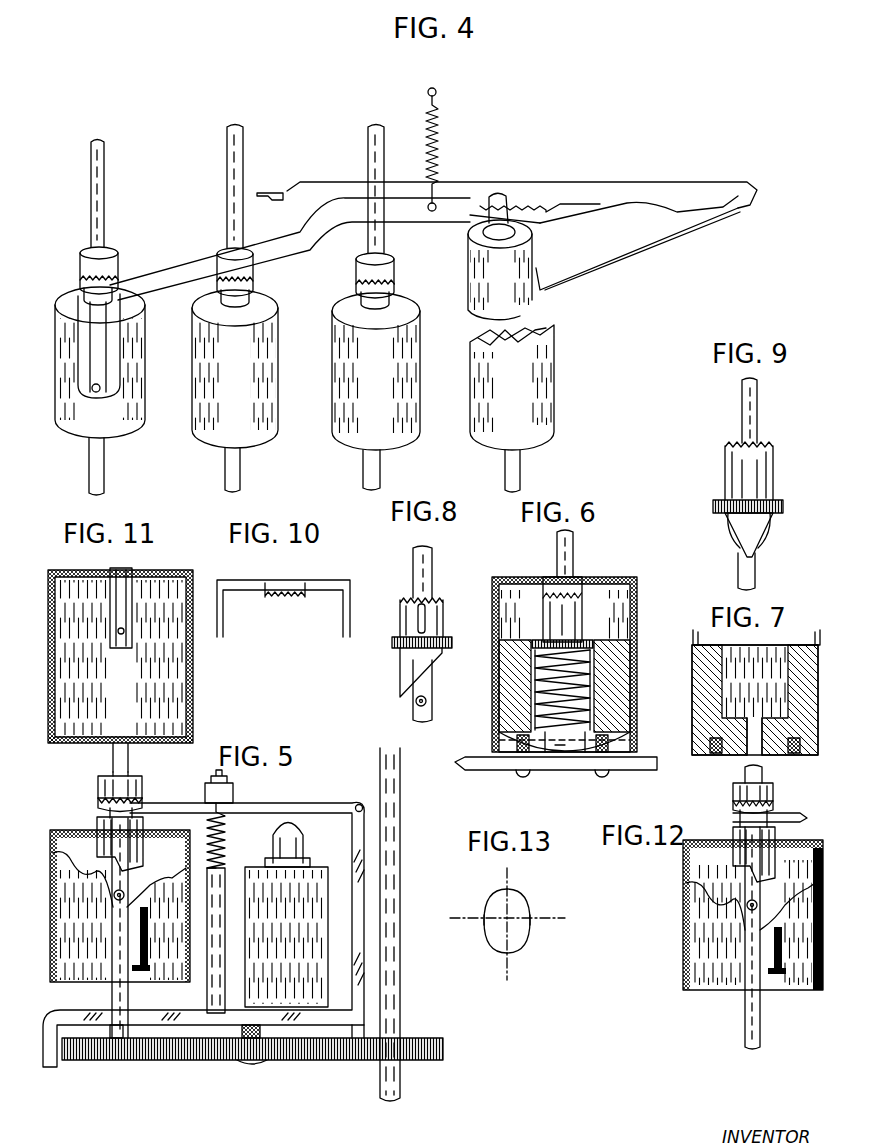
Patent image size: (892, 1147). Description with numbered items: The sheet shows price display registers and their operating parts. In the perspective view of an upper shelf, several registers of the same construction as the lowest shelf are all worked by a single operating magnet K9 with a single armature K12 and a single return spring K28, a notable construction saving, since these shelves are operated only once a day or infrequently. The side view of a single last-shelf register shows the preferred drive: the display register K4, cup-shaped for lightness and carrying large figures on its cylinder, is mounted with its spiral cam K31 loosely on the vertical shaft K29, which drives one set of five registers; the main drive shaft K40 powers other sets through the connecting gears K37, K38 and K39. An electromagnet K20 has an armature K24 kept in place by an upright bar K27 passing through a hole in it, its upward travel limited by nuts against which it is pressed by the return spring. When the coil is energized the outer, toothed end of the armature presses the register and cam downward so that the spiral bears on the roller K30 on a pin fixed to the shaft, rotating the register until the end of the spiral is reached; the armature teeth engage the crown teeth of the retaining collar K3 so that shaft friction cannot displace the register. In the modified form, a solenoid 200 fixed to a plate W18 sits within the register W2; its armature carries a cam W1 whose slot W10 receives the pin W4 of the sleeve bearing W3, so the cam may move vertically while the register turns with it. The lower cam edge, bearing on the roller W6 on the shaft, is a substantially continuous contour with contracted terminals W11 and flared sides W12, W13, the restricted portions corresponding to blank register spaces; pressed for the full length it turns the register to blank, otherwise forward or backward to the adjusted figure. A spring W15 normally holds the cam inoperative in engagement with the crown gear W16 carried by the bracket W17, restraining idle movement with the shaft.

In FIG. 4, the armature K12 is at (472, 190).
In FIG. 4, the return spring K28 is at (443, 150).
In FIG. 5, the return spring K28 is at (229, 829).
In FIG. 4, the operating magnet K9 is at (532, 247).
In FIG. 11, the register W2 is at (193, 672).
In FIG. 6, the register W2 is at (637, 614).
In FIG. 11, the sleeve bearing W3 is at (135, 614).
In FIG. 11, the pin W4 is at (118, 630).
In FIG. 10, the bracket W17 is at (240, 580).
In FIG. 7, the bracket W17 is at (812, 641).
In FIG. 10, the crown gear W16 is at (270, 600).
In FIG. 8, the cam W1 is at (442, 606).
In FIG. 6, the cam W1 is at (585, 615).
In FIG. 8, the slot W10 is at (426, 624).
In FIG. 8, the roller W6 is at (428, 701).
In FIG. 6, the solenoid 200 is at (626, 660).
In FIG. 7, the solenoid 200 is at (810, 688).
In FIG. 6, the spring W15 is at (582, 700).
In FIG. 6, the plate W18 is at (566, 764).
In FIG. 9, the contracted terminals W11 is at (752, 553).
In FIG. 13, the contracted terminals W11 is at (508, 892).
In FIG. 9, the flared side W13 is at (728, 530).
In FIG. 13, the flared side W13 is at (484, 918).
In FIG. 9, the flared side W12 is at (770, 533).
In FIG. 13, the flared side W12 is at (530, 918).
In FIG. 5, the retaining collar K3 is at (143, 789).
In FIG. 12, the retaining collar K3 is at (775, 792).
In FIG. 5, the armature K24 is at (310, 805).
In FIG. 12, the armature K24 is at (735, 815).
In FIG. 5, the cam K31 is at (97, 823).
In FIG. 12, the cam K31 is at (733, 830).
In FIG. 5, the display register K4 is at (50, 955).
In FIG. 12, the display register K4 is at (683, 955).
In FIG. 5, the roller K30 is at (112, 895).
In FIG. 12, the roller K30 is at (745, 902).
In FIG. 5, the upright bar K27 is at (225, 878).
In FIG. 5, the electromagnet K20 is at (308, 873).
In FIG. 5, the connecting gear K37 is at (142, 1060).
In FIG. 5, the vertical shaft K29 is at (97, 1047).
In FIG. 5, the connecting gear K38 is at (225, 1060).
In FIG. 5, the connecting gear K39 is at (365, 1060).
In FIG. 5, the main drive shaft K40 is at (401, 1080).